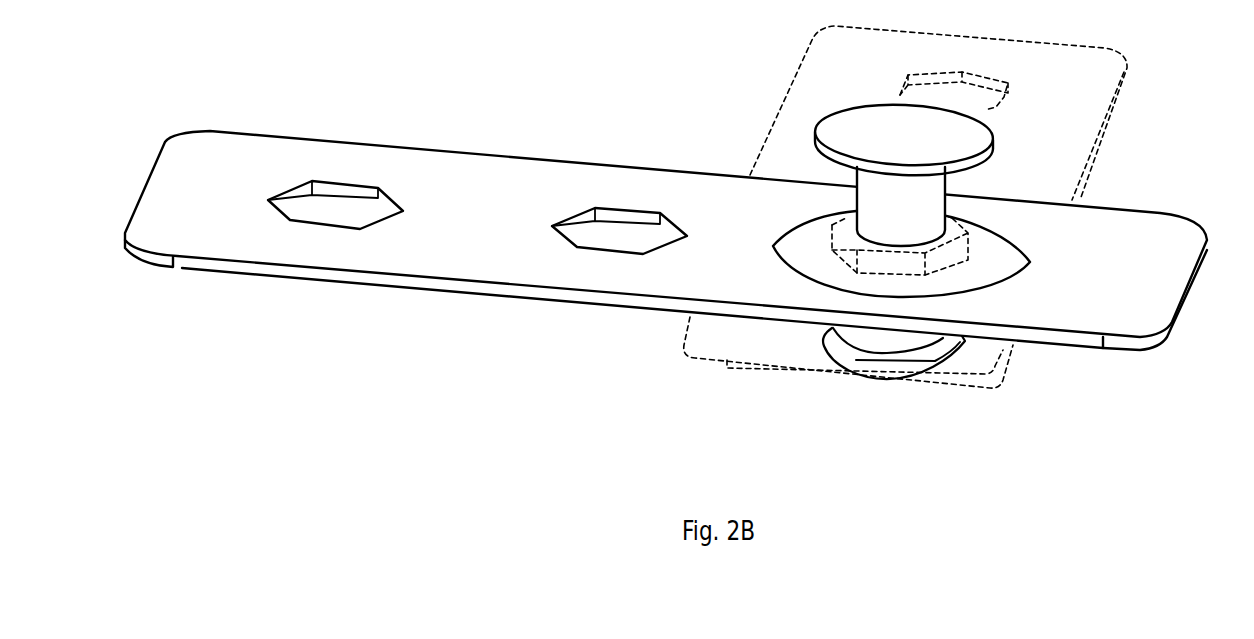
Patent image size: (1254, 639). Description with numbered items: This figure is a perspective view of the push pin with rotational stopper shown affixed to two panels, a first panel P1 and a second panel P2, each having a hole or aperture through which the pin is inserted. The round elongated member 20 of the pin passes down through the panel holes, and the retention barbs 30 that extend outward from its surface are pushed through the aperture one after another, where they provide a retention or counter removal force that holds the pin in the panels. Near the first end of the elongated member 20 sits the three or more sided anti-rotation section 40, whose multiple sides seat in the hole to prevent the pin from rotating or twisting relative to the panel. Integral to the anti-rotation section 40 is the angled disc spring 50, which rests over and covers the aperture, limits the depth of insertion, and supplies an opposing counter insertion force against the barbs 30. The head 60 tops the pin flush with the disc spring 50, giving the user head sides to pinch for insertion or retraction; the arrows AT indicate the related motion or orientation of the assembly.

The elongated member 20 is at (895, 381).
The retention barbs 30 is at (917, 368).
The three or more sided anti-rotation section 40 is at (830, 238).
The disc spring 50 is at (980, 232).
The head 60 is at (984, 123).
The first panel P1 is at (502, 173).
The second panel P2 is at (1033, 43).
The assembly tool direction AT is at (1163, 194).